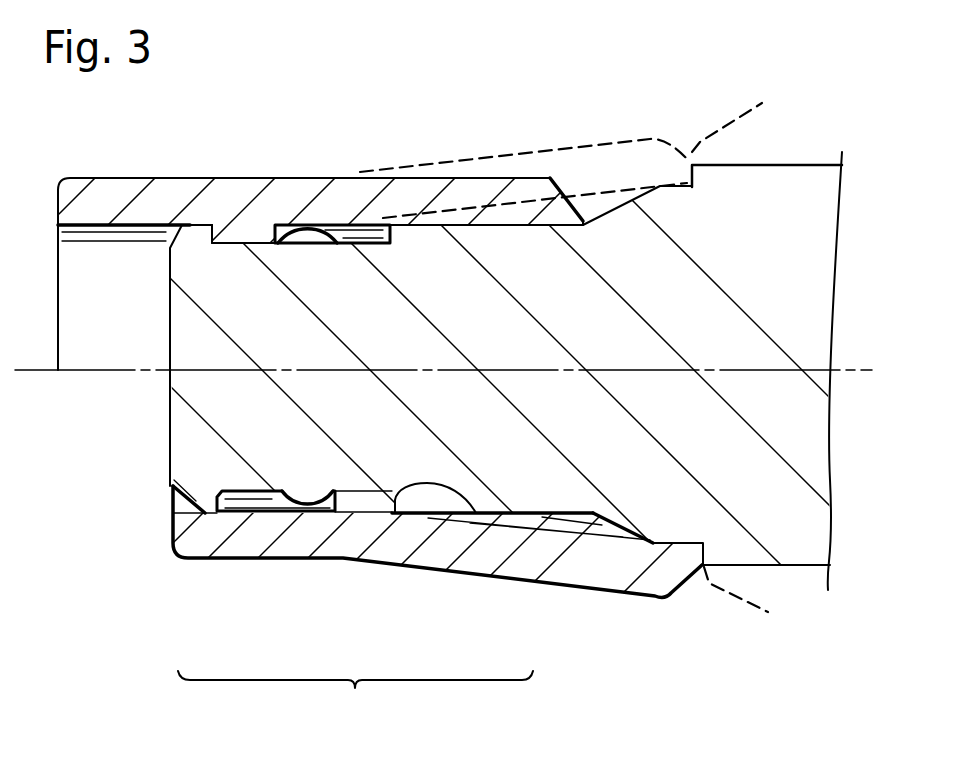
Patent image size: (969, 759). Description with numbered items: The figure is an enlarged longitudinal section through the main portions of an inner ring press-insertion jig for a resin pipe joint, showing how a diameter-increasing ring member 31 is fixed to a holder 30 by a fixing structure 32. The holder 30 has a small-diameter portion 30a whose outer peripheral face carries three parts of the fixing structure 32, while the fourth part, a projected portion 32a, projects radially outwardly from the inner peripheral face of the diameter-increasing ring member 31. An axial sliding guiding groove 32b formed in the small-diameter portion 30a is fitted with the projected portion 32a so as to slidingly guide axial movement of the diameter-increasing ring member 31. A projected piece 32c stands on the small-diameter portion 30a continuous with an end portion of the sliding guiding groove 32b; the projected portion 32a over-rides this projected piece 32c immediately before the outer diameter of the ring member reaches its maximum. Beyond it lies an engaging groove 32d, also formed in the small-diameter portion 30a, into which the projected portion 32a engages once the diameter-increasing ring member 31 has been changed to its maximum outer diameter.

The holder 30 is at (826, 267).
The small-diameter portion 30a is at (182, 427).
The diameter-increasing ring member 31 is at (128, 186).
The fixing structure 32 is at (355, 700).
The projected portion 32a is at (236, 240).
The axial sliding guiding groove 32b is at (235, 503).
The projected piece 32c is at (310, 230).
The engaging groove 32d is at (368, 235).